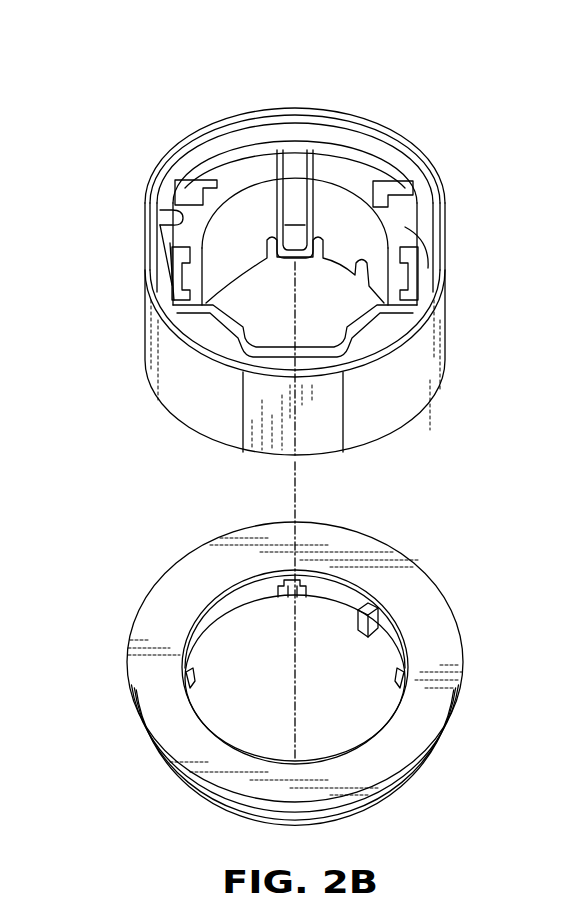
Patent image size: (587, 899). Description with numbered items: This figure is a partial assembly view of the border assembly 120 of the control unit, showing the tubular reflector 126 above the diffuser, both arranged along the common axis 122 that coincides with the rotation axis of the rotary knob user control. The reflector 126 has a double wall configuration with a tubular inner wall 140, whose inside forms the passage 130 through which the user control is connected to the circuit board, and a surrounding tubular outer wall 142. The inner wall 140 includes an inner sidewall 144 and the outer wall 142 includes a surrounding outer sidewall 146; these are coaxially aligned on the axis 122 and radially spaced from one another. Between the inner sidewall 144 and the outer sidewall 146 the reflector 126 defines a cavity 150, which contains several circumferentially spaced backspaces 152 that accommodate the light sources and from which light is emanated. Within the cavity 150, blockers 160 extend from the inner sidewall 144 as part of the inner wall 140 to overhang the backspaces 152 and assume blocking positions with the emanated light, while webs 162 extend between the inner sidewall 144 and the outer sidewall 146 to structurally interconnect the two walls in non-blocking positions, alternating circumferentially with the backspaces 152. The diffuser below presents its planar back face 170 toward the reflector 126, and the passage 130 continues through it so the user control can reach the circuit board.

The border assembly 120 is at (258, 50).
The axis 122 is at (293, 503).
The tubular reflector 126 is at (140, 320).
The passage 130 is at (262, 195).
The tubular inner wall 140 is at (238, 173).
The tubular outer wall 142 is at (208, 129).
The inner sidewall 144 is at (215, 174).
The outer sidewall 146 is at (180, 214).
The cavity 150 is at (146, 233).
The backspace 152 is at (160, 261).
The blocker 160 is at (167, 278).
The web 162 is at (236, 148).
The planar back face 170 is at (197, 582).